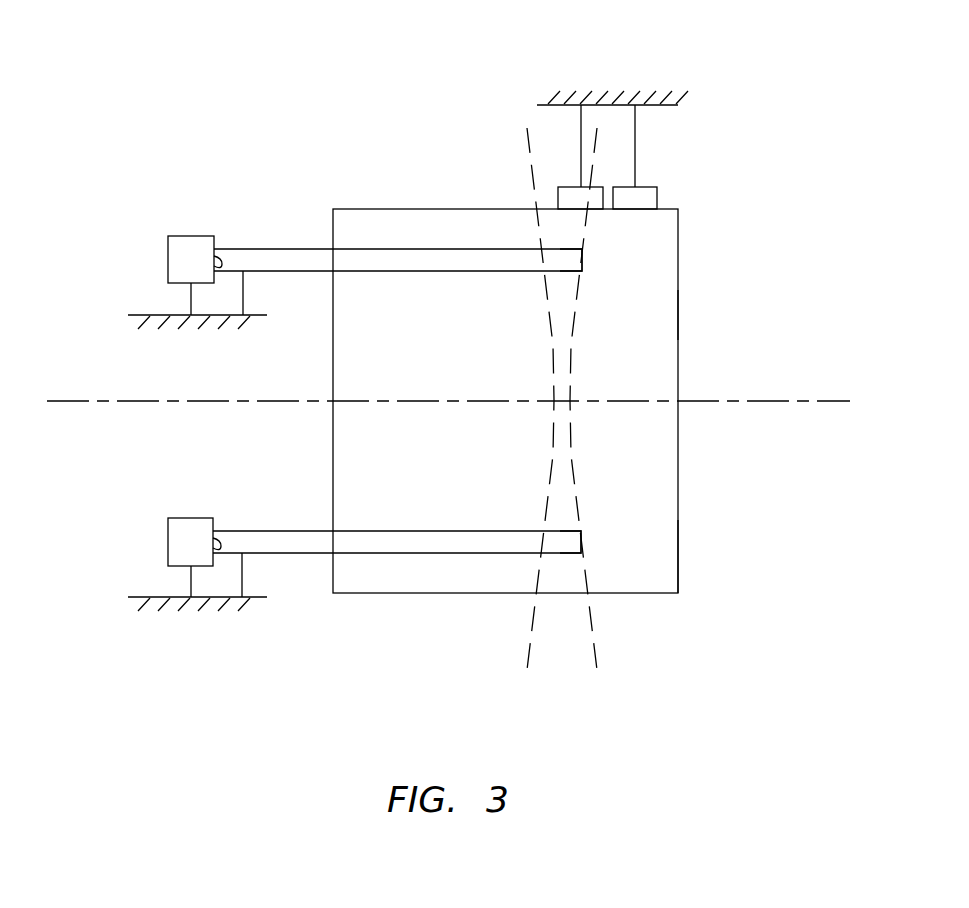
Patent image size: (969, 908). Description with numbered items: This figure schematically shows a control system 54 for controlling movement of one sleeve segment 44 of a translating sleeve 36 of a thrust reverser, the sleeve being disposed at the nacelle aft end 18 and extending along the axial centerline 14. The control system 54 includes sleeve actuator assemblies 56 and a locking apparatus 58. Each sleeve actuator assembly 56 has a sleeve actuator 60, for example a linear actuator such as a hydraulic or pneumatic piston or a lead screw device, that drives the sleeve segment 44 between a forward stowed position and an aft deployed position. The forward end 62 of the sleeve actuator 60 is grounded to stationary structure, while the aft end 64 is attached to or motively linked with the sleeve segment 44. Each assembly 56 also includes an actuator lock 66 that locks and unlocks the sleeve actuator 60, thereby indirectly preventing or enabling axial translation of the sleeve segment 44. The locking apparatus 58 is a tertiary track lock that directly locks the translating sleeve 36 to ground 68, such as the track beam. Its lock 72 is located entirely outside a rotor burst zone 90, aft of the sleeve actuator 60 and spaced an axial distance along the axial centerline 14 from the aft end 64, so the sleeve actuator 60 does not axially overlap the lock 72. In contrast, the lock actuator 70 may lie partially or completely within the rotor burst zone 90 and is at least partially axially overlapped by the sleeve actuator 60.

The control system 54 is at (115, 86).
The sleeve actuator assembly 56 is at (339, 391).
The actuator lock 66 is at (185, 236).
The forward end 62 is at (222, 262).
The sleeve actuator 60 is at (283, 249).
The aft end 64 is at (582, 262).
The lock actuator 70 is at (557, 200).
The lock 72 is at (662, 178).
The locking apparatus 58 is at (610, 161).
The ground 68 is at (657, 105).
The translating sleeve 36 is at (680, 271).
The sleeve segment 44 is at (668, 312).
The nacelle aft end 18 is at (678, 540).
The rotor burst zone 90 is at (597, 633).
The axial centerline 14 is at (816, 402).